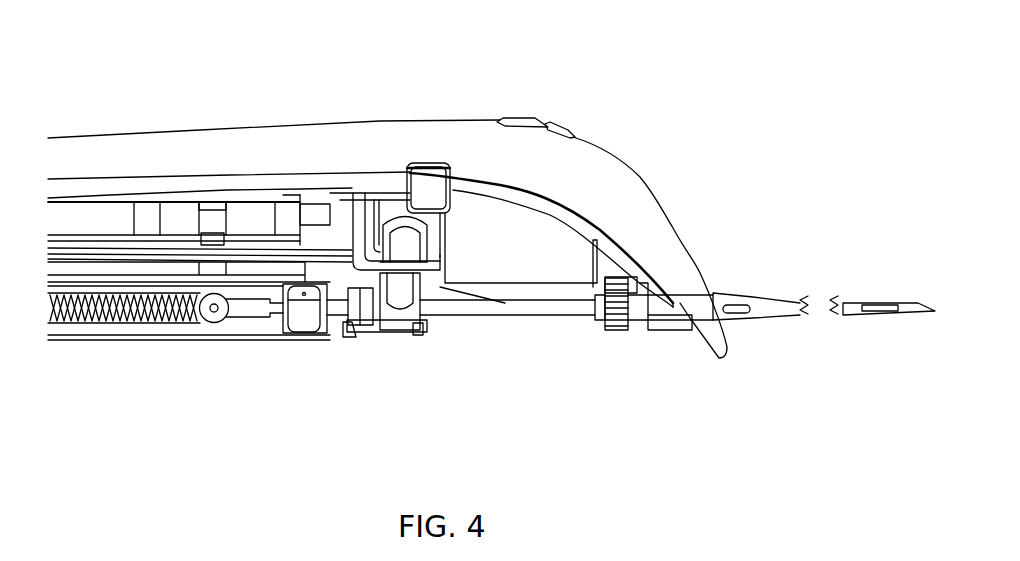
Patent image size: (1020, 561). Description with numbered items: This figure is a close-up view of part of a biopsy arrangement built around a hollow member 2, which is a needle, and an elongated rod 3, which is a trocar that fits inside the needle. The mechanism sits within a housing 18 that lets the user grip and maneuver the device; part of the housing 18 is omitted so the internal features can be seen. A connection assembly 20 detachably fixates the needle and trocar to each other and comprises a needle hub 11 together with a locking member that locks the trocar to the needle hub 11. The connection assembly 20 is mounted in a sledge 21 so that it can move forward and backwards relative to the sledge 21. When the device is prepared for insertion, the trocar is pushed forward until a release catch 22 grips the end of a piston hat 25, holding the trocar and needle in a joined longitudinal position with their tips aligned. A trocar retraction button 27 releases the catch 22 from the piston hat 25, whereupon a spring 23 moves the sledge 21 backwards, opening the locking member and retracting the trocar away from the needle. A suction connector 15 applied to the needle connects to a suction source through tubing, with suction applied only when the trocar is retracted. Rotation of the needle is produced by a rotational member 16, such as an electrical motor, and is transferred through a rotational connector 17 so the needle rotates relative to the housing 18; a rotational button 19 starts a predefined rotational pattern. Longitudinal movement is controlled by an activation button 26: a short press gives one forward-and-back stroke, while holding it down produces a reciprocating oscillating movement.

The hollow member 2 is at (778, 308).
The elongated rod 3 is at (911, 305).
The needle hub 11 is at (353, 300).
The suction connector 15 is at (668, 316).
The rotational member 16 is at (505, 247).
The rotational connector 17 is at (620, 330).
The housing 18 is at (305, 148).
The rotational button 19 is at (561, 128).
The connection assembly 20 is at (287, 346).
The sledge 21 is at (355, 335).
The release catch 22 is at (422, 335).
The spring 23 is at (152, 300).
The piston hat 25 is at (397, 326).
The activation button 26 is at (531, 119).
The trocar retraction button 27 is at (427, 200).